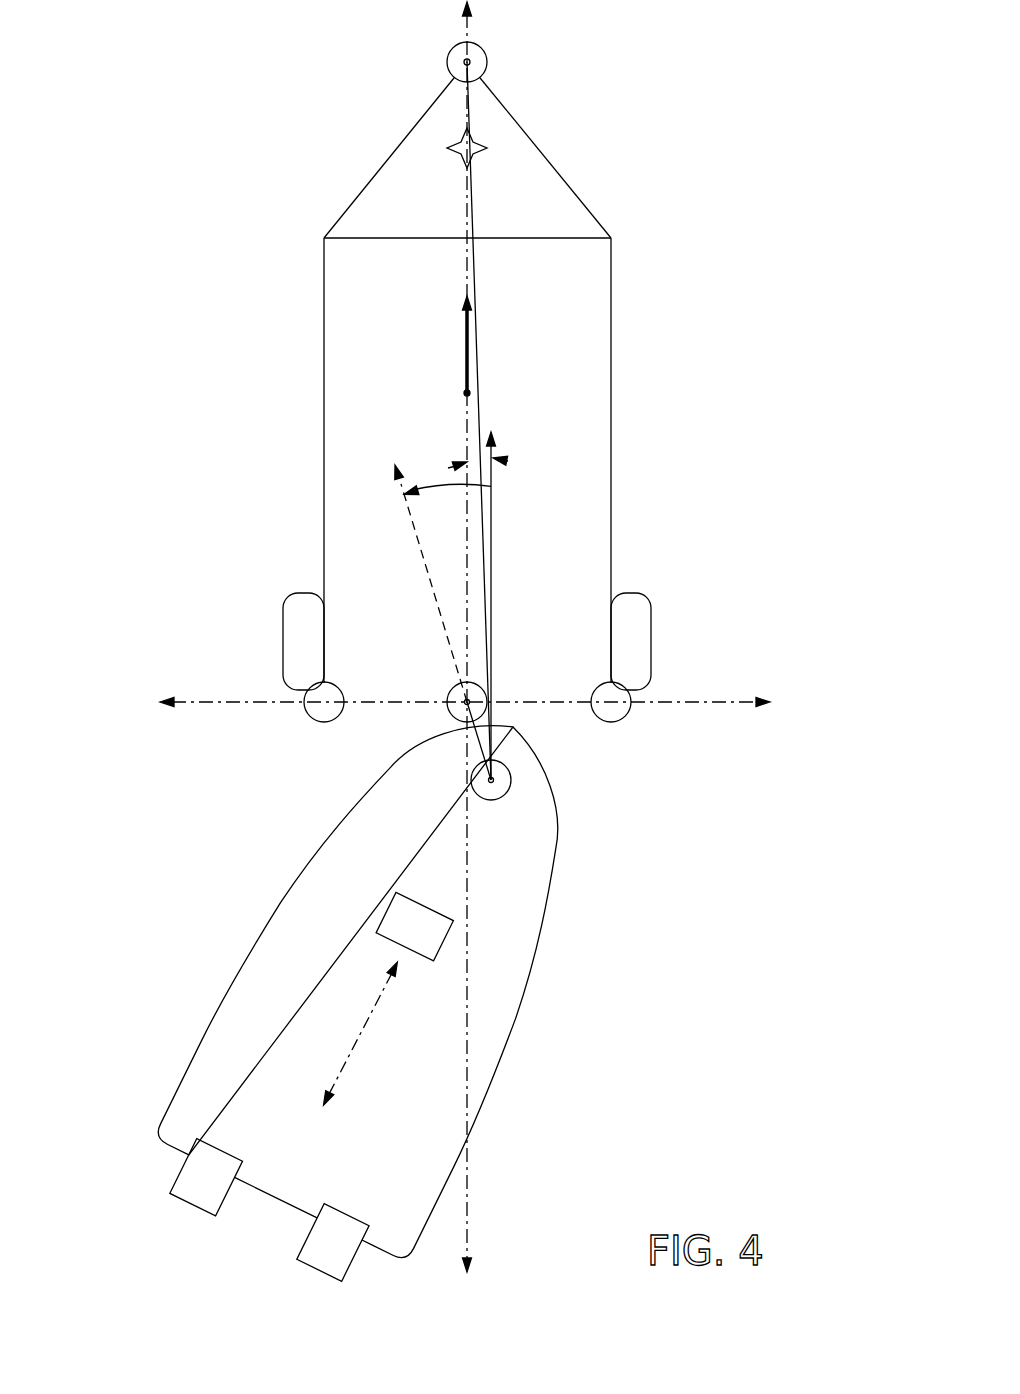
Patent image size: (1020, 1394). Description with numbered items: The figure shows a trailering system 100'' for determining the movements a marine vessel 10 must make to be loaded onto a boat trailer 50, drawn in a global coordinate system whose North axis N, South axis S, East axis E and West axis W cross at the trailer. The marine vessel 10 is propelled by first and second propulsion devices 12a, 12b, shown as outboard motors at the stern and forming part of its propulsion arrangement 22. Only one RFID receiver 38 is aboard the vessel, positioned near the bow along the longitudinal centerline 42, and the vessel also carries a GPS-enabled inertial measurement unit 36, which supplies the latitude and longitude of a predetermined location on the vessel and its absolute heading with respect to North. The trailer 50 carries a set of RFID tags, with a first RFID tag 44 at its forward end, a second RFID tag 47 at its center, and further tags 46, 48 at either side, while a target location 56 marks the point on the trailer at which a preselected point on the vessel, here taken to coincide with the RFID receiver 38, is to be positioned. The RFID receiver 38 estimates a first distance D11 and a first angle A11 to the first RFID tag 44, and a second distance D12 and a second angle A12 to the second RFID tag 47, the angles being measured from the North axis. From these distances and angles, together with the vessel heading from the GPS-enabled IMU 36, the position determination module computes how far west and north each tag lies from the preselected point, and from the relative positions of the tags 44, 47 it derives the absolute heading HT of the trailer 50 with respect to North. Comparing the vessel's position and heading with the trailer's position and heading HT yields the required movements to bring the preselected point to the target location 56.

The marine vessel 10 is at (238, 970).
The first propulsion device 12a is at (188, 1206).
The second propulsion device 12b is at (316, 1272).
The propulsion system 22 is at (223, 1237).
The GPS-enabled inertial measurement unit 36 is at (431, 906).
The RFID receiver 38 is at (492, 800).
The longitudinal centerline 42 is at (362, 1030).
The first RFID tag 44 is at (455, 50).
The RFID tag 46 is at (332, 720).
The second RFID tag 47 is at (456, 689).
The RFID tag 48 is at (619, 720).
The trailer 50 is at (324, 352).
The target location 56 is at (484, 152).
The trailering system 100'' is at (773, 507).
The trailer heading HT is at (465, 349).
The first distance D11 is at (477, 370).
The second distance D12 is at (478, 742).
The first angle A11 is at (505, 462).
The second angle A12 is at (440, 482).
The North axis N is at (470, 16).
The South axis S is at (470, 1196).
The East axis E is at (737, 696).
The West axis W is at (250, 696).